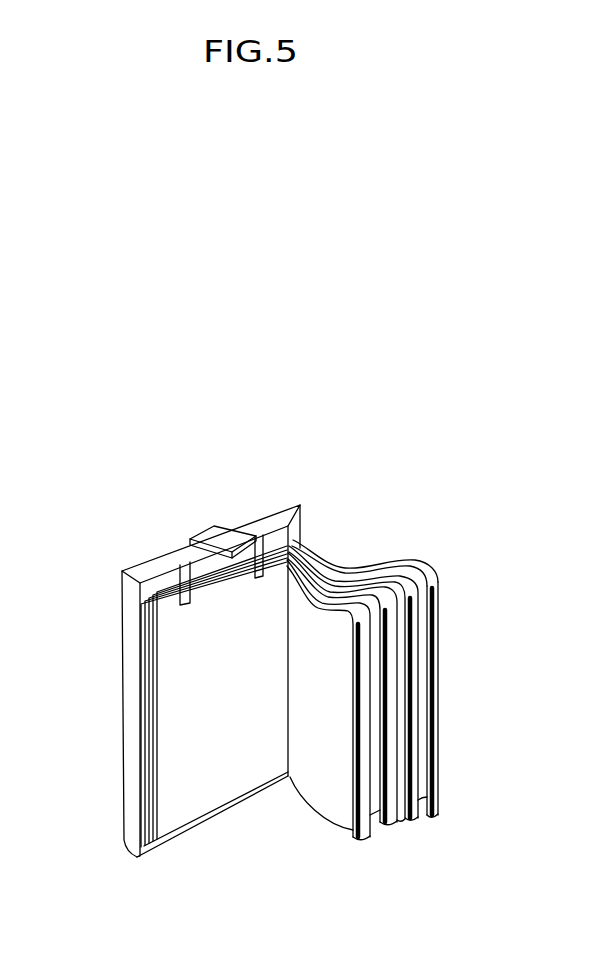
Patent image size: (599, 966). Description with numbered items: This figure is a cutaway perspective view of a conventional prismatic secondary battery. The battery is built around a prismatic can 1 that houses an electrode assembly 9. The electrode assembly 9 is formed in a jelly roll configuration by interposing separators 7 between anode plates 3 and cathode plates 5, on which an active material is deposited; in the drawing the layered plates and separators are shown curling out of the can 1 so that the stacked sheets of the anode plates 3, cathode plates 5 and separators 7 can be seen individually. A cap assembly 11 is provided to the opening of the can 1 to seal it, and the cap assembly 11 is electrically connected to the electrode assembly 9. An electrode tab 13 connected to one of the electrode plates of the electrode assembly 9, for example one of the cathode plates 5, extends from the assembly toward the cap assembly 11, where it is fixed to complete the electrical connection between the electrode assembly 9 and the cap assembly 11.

The prismatic can 1 is at (134, 667).
The anode plates 3 is at (438, 776).
The cathode plates 5 is at (395, 812).
The separators 7 is at (412, 702).
The electrode assembly 9 is at (440, 600).
The cap assembly 11 is at (180, 520).
The electrode tab 13 is at (270, 527).